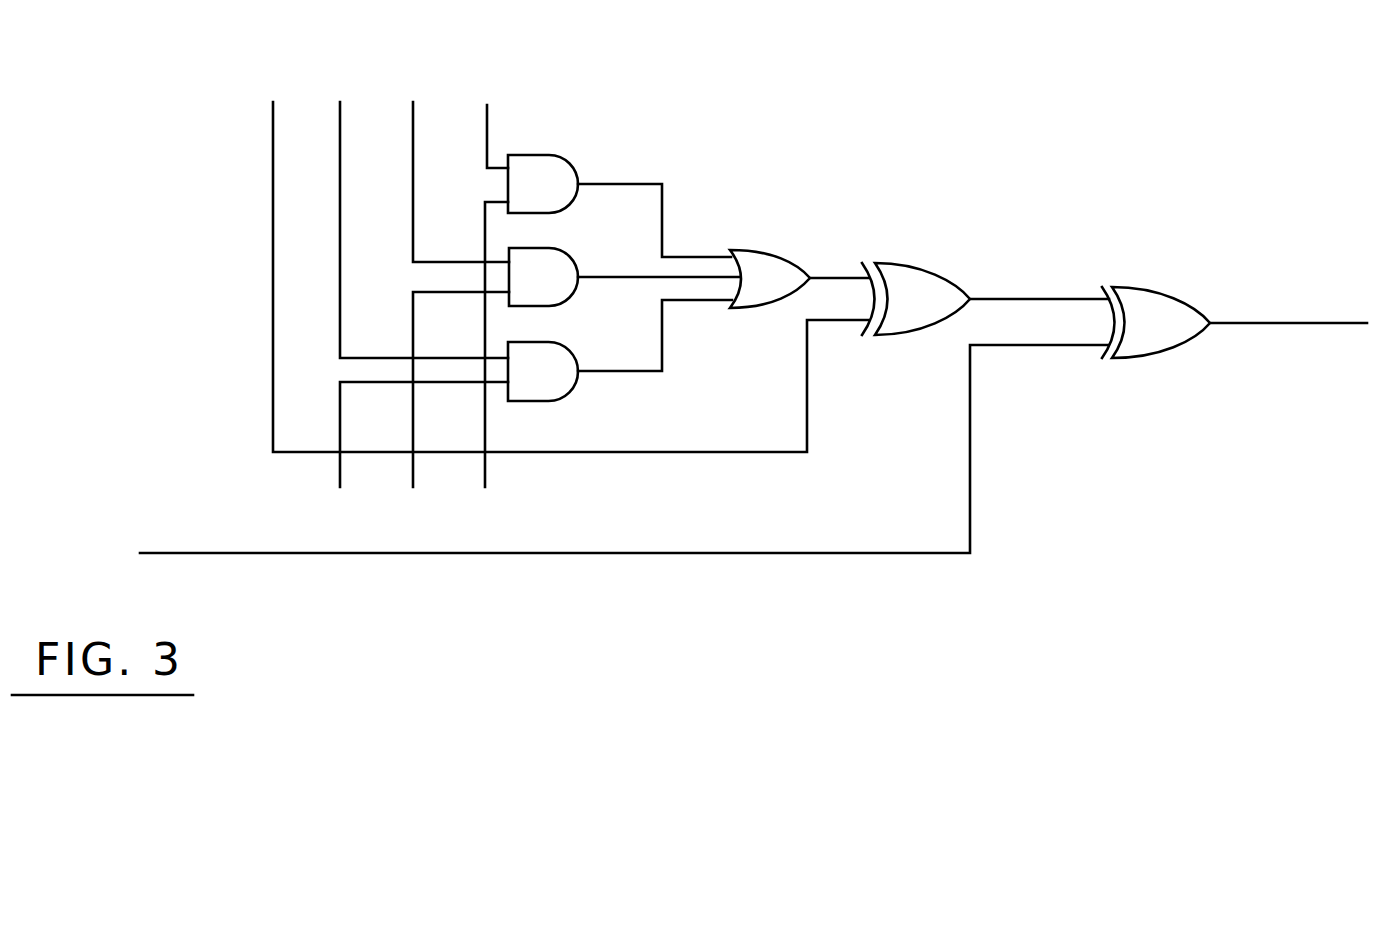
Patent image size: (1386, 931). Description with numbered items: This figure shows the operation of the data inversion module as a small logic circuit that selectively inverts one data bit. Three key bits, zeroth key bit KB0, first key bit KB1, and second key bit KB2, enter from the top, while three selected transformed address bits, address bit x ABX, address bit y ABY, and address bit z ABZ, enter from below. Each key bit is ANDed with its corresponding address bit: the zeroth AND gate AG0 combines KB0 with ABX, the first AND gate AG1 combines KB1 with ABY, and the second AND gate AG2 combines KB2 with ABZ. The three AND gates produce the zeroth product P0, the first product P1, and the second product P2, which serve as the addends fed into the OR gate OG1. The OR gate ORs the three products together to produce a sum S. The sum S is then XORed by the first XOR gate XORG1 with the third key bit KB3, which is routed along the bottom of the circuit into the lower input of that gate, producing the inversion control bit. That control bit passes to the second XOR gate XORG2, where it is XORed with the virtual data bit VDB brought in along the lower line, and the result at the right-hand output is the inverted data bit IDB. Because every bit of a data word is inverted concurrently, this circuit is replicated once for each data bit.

The third key bit KB3 is at (560, 258).
The key bit 2 KB2 is at (413, 211).
The key bit 1 KB1 is at (451, 163).
The key bit 0 KB0 is at (487, 116).
The address bit x ABX is at (484, 367).
The address bit y ABY is at (448, 412).
The address bit z ABZ is at (413, 457).
The virtual data bit VDB is at (588, 455).
The AND gate 0 AG0 is at (543, 184).
The AND gate 1 AG1 is at (543, 277).
The AND gate 2 AG2 is at (543, 371).
The product 0 P0 is at (654, 200).
The product 1 P1 is at (658, 260).
The product 2 P2 is at (655, 335).
The OR gate OG1 is at (770, 279).
The sum S is at (839, 261).
The first XOR gate XORG1 is at (985, 299).
The second XOR gate XORG2 is at (1156, 322).
The inverted data bit IDB is at (1288, 303).